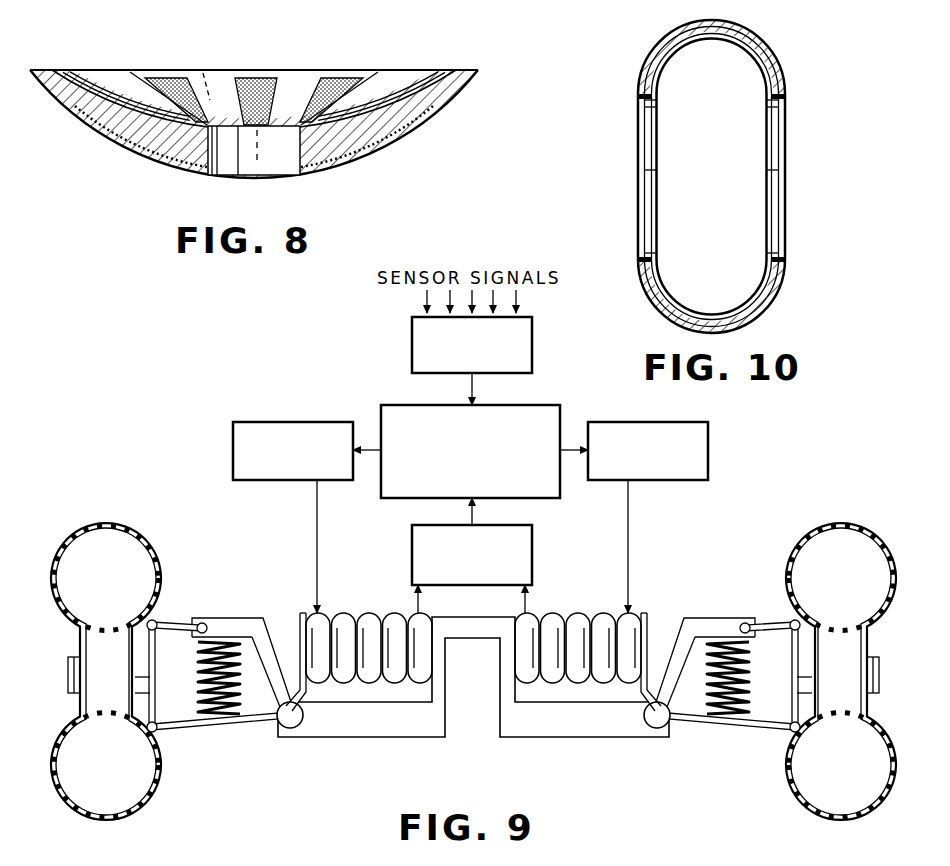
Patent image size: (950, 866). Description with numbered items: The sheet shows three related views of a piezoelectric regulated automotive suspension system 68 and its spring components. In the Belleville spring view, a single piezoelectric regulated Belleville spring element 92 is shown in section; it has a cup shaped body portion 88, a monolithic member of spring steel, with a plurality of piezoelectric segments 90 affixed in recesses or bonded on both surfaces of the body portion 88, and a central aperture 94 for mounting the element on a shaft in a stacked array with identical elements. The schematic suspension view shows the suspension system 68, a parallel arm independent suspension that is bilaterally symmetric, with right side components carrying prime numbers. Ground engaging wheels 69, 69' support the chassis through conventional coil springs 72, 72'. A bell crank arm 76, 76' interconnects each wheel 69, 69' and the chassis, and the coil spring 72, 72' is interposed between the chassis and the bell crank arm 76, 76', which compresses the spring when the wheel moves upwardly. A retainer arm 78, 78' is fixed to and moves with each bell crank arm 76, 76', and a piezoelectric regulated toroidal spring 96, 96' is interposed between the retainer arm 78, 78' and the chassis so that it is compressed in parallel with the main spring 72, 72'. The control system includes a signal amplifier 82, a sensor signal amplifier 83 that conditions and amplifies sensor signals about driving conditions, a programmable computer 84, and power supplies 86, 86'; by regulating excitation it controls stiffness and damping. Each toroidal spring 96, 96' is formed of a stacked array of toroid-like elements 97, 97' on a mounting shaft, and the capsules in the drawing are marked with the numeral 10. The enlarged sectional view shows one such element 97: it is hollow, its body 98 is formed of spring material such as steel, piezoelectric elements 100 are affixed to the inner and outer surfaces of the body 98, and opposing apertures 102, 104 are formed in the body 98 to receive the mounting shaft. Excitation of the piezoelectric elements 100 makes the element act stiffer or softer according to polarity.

In FIG. 8, the cup shaped body portion 88 is at (53, 73).
In FIG. 8, the piezoelectric segments 90 is at (173, 80).
In FIG. 8, the Belleville spring element 92 is at (375, 63).
In FIG. 8, the aperture 94 is at (288, 163).
In FIG. 10, the toroid-like element 97 is at (723, 175).
In FIG. 9, the toroid-like element 97 is at (343, 694).
In FIG. 10, the body 98 is at (783, 70).
In FIG. 10, the piezoelectric elements 100 is at (660, 47).
In FIG. 10, the aperture 102 is at (640, 108).
In FIG. 10, the aperture 104 is at (780, 257).
In FIG. 9, the sensor signal amplifier 83 is at (412, 345).
In FIG. 9, the programmable computer 84 is at (392, 498).
In FIG. 9, the power supply 86 is at (279, 426).
In FIG. 9, the power supply 86' is at (685, 451).
In FIG. 9, the signal amplifier 82 is at (533, 538).
In FIG. 9, the suspension system 68 is at (148, 478).
In FIG. 9, the ground engaging wheel 69 is at (106, 644).
In FIG. 9, the ground engaging wheel 69' is at (841, 641).
In FIG. 9, the coil spring 72 is at (219, 639).
In FIG. 9, the coil spring 72' is at (731, 638).
In FIG. 9, the bell crank arm 76 is at (225, 740).
In FIG. 9, the bell crank arm 76' is at (722, 744).
In FIG. 9, the retainer arm 78 is at (282, 629).
In FIG. 9, the retainer arm 78' is at (667, 637).
In FIG. 9, the toroidal spring 96 is at (369, 660).
In FIG. 9, the toroidal spring 96' is at (578, 660).
In FIG. 9, the toroid-like element 97' is at (556, 694).
In FIG. 9, the sensor unit 10 is at (350, 665).